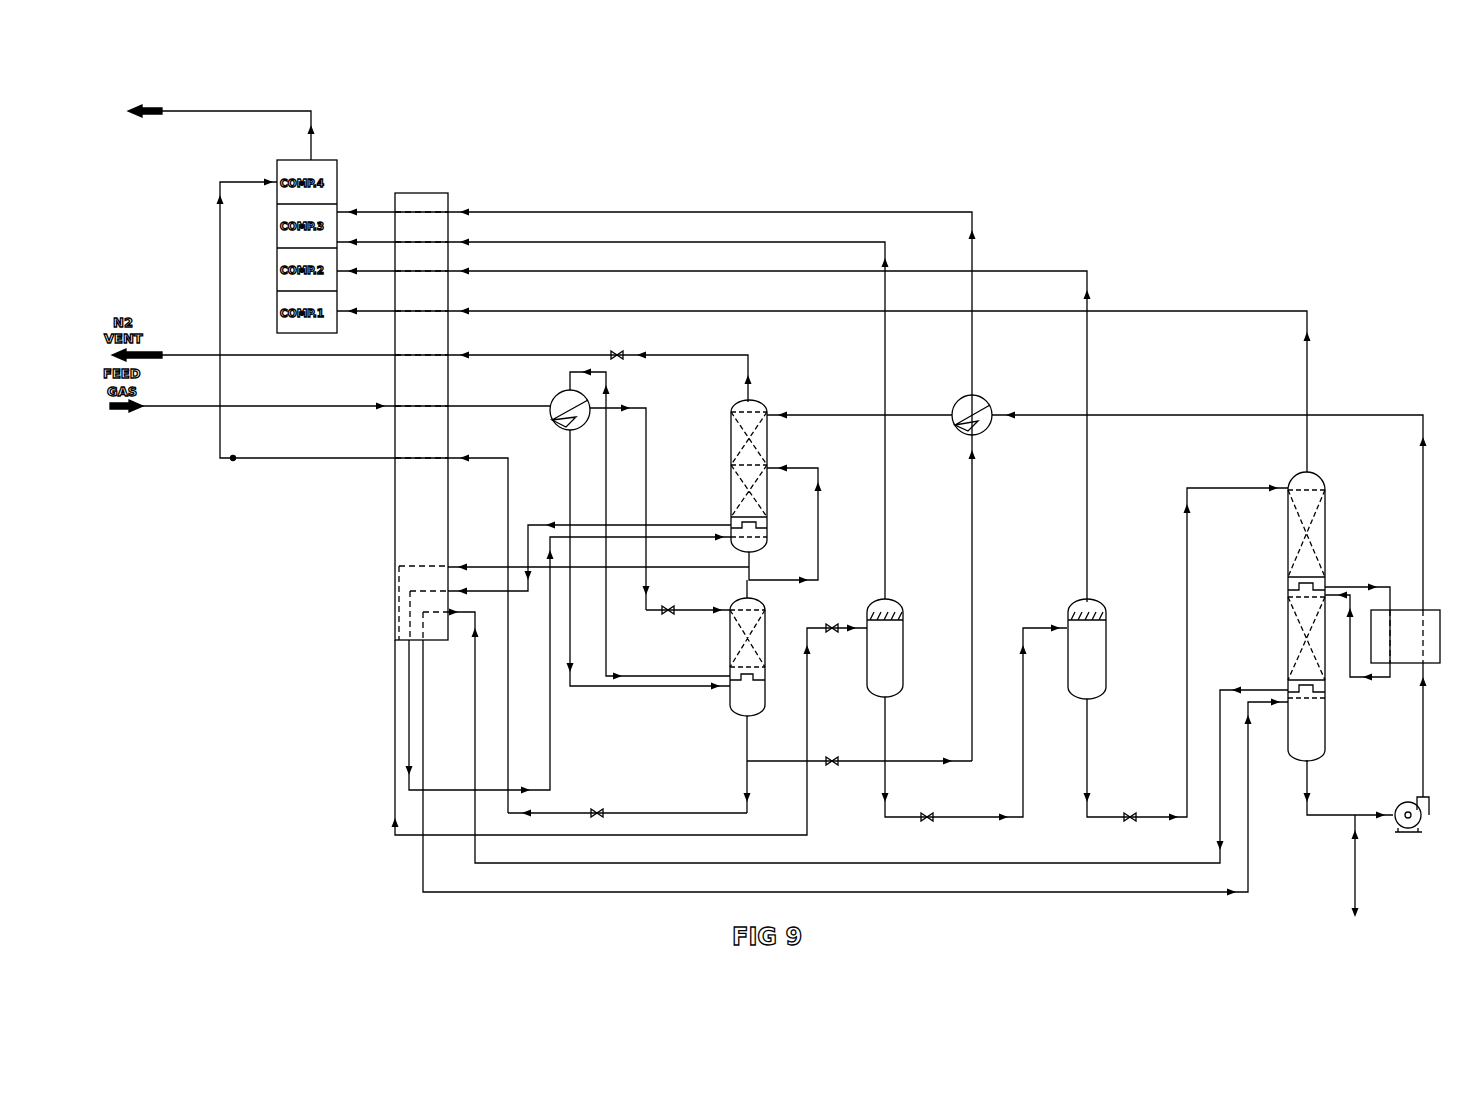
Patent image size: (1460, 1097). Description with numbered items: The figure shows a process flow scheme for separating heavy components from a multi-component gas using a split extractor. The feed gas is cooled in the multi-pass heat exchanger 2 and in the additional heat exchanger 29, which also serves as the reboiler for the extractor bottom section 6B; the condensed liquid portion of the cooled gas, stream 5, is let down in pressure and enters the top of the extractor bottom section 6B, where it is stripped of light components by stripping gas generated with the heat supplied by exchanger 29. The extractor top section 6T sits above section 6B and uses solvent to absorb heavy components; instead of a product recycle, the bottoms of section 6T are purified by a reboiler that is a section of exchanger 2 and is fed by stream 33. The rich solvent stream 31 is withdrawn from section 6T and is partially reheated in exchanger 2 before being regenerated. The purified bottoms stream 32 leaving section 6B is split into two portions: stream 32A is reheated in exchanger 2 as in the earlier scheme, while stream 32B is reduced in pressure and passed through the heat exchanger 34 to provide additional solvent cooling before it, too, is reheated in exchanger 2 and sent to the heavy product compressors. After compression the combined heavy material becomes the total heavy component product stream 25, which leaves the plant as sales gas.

The total heavy component product stream 25 is at (219, 115).
The heat exchanger 2 is at (391, 532).
The heat exchanger 29 is at (551, 428).
The extractor top section 6T is at (720, 458).
The stream 33 is at (589, 550).
The rich solvent stream 31 is at (598, 557).
The liquid portion of the cooled multi-component gas stream 5 is at (688, 601).
The extractor bottom section 6B is at (721, 699).
The extractor bottoms stream 32 is at (734, 764).
The bottoms stream portion 32B is at (859, 752).
The bottoms stream portion 32A is at (627, 803).
The heat exchanger 34 is at (993, 396).